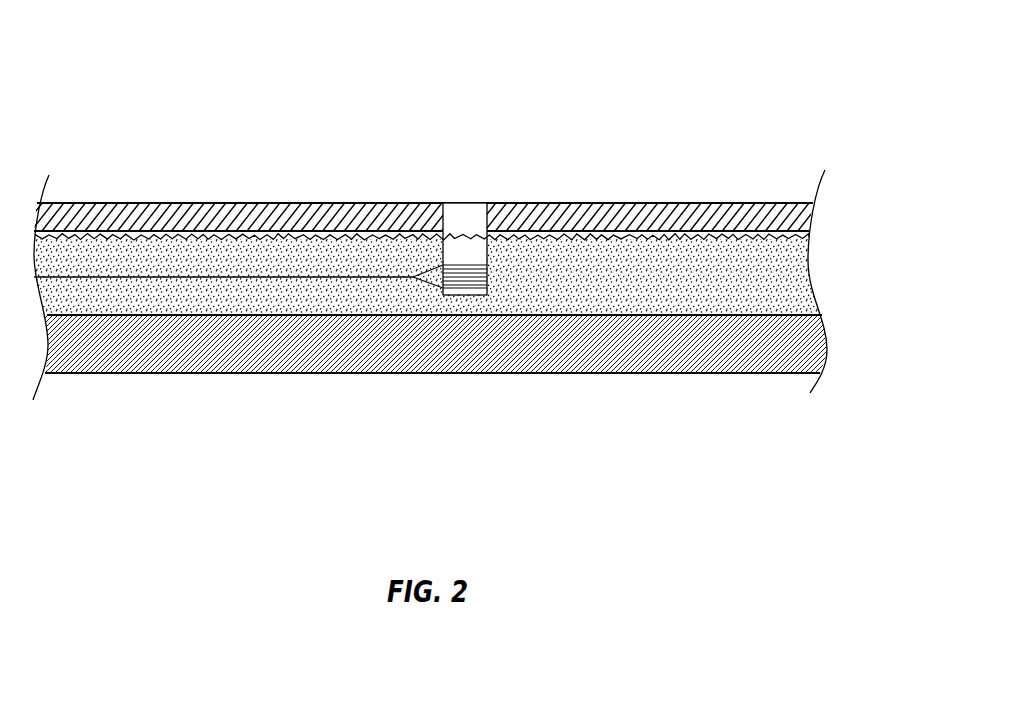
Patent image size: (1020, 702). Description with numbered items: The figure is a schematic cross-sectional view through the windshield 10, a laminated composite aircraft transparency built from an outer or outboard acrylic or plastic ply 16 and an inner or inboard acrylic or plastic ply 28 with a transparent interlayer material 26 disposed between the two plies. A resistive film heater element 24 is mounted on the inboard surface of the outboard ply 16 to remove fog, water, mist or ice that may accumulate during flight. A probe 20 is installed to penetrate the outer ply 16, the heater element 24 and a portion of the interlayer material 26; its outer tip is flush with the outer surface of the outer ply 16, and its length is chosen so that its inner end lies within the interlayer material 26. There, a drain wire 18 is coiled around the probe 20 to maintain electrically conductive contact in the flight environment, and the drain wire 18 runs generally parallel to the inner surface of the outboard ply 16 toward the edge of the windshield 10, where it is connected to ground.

The windshield 10 is at (720, 88).
The outer acrylic or plastic ply 16 is at (125, 215).
The drain wire 18 is at (222, 277).
The probe 20 is at (457, 203).
The resistive film heater element 24 is at (757, 234).
The transparent interlayer material 26 is at (633, 283).
The inner acrylic or plastic ply 28 is at (327, 340).